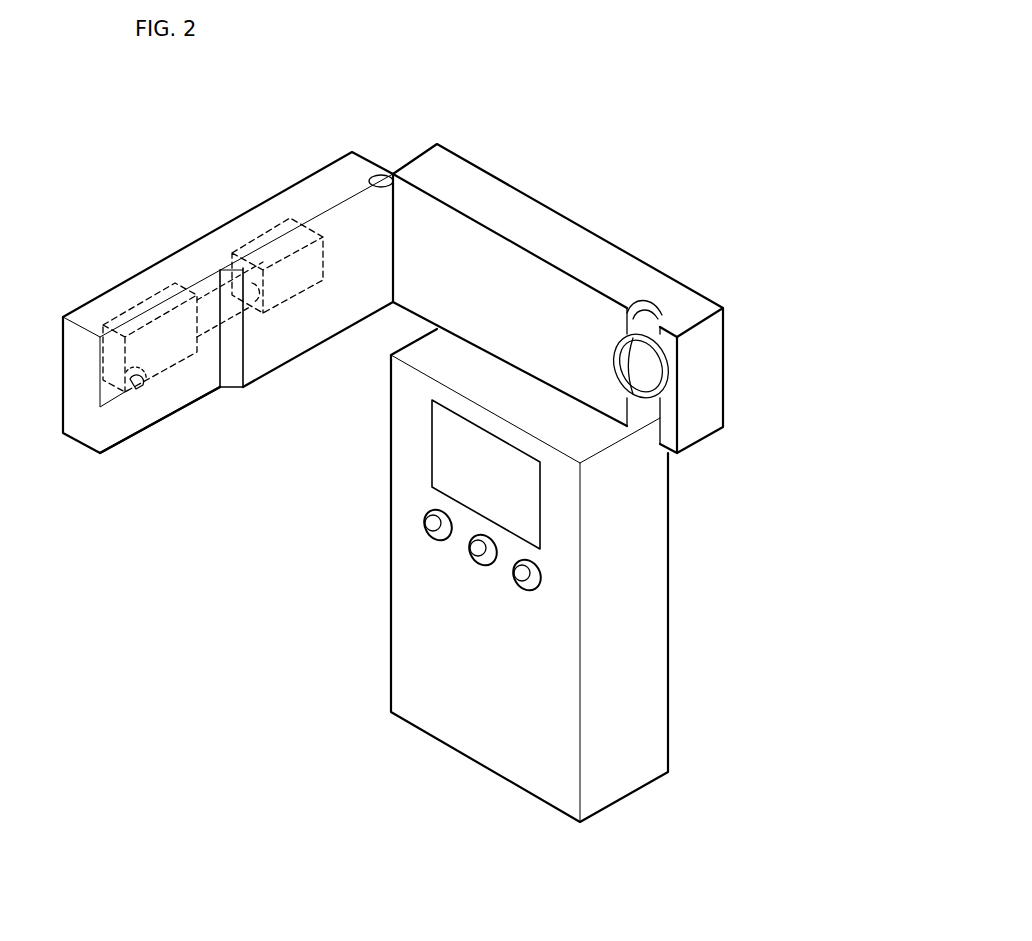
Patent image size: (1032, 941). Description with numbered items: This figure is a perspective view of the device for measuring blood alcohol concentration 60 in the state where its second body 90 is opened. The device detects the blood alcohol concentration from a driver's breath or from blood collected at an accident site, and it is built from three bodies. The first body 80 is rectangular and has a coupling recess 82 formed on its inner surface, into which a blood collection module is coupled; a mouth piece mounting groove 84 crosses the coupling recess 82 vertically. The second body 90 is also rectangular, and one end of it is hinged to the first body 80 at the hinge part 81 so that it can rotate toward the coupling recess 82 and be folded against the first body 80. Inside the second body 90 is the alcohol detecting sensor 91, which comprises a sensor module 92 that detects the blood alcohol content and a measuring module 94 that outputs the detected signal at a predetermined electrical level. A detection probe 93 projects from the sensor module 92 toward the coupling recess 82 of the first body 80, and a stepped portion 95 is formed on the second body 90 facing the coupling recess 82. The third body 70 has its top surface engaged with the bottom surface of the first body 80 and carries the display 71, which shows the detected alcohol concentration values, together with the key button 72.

The device for measuring blood alcohol concentration 60 is at (409, 305).
The third body 70 is at (556, 573).
The display 71 is at (437, 453).
The key button 72 is at (428, 530).
The first body 80 is at (563, 277).
The hinge part 81 is at (385, 174).
The coupling recess 82 is at (668, 383).
The mouth piece mounting groove 84 is at (646, 302).
The second body 90 is at (226, 314).
The alcohol detecting sensor 91 is at (191, 326).
The sensor module 92 is at (145, 335).
The detection probe 93 is at (140, 387).
The measuring module 94 is at (250, 250).
The stepped portion 95 is at (190, 388).